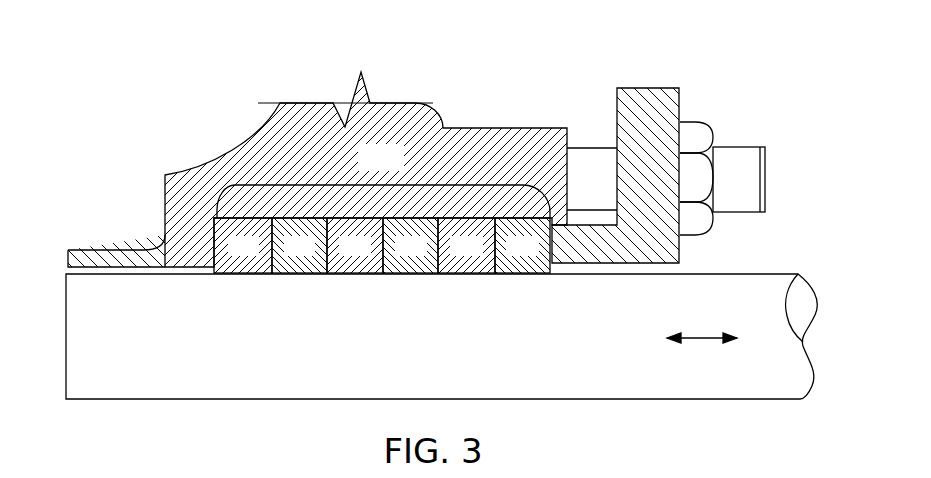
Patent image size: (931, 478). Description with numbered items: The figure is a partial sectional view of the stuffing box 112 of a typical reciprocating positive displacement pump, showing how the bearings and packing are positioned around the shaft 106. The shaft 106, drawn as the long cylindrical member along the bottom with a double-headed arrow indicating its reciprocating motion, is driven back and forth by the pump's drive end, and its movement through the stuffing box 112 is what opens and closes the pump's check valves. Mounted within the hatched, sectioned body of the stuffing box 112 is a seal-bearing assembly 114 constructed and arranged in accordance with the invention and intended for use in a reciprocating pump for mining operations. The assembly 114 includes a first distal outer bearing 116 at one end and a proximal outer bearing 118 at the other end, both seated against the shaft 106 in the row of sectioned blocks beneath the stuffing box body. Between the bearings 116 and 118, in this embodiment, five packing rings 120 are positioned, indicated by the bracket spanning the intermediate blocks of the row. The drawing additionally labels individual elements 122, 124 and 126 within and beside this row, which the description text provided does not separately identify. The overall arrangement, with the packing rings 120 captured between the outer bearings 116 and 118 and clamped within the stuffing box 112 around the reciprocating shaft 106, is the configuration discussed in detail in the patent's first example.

The shaft 106 is at (772, 290).
The stuffing box 112 is at (502, 142).
The seal-bearing assembly 114 is at (390, 185).
The first distal outer bearing 116 is at (226, 258).
The proximal outer bearing 118 is at (505, 258).
The packing rings 120 is at (272, 276).
The block 122 is at (282, 258).
The block 124 is at (338, 258).
The block / clamp bracket 126 is at (449, 258).